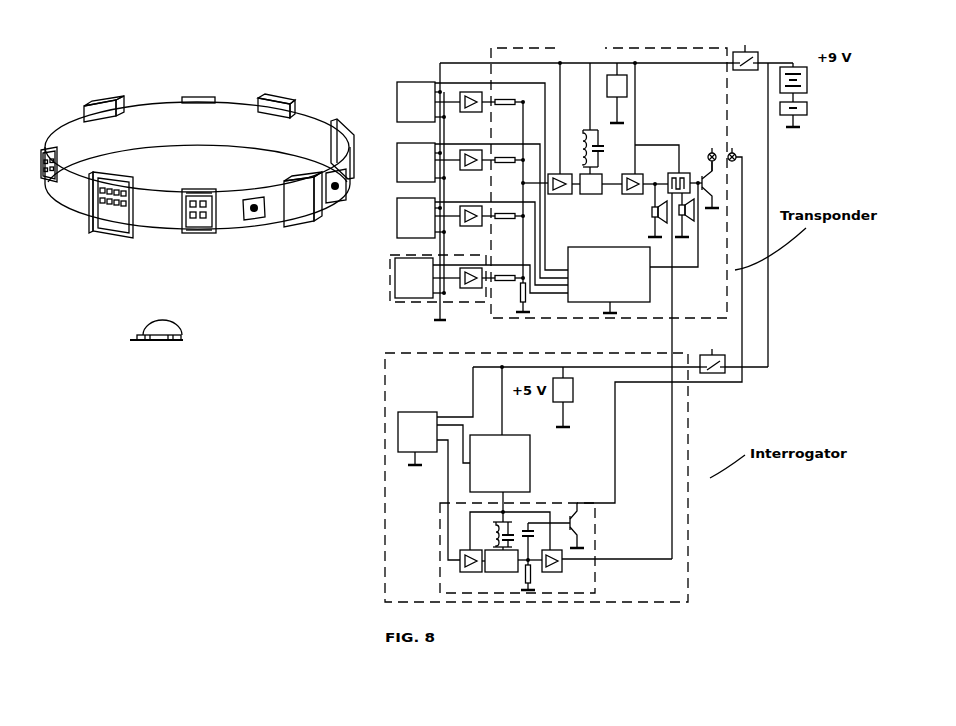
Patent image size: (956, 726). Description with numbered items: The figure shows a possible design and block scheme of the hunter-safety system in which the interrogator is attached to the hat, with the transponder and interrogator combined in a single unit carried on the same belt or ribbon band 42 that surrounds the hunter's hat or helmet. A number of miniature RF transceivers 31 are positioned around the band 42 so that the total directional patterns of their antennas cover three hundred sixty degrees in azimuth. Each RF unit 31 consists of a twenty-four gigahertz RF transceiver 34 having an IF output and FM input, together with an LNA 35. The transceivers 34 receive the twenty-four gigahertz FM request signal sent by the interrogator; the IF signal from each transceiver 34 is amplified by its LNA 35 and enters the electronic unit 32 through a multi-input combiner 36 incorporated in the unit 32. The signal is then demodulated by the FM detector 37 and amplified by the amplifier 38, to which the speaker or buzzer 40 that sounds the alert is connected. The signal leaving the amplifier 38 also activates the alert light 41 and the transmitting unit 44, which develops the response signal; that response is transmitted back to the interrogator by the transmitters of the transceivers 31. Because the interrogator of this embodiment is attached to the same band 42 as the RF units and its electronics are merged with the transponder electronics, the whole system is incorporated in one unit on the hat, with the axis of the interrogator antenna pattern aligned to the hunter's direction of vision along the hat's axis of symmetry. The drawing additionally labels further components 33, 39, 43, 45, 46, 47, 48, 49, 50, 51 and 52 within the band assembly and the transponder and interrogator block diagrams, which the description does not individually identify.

The RF transceiver 31 is at (200, 92).
The electronic unit 32 is at (278, 93).
The battery power supply 33 is at (97, 93).
The 24-GHz RF transceiver 34 is at (390, 258).
The LNA 35 is at (473, 260).
The multi-input combiner 36 is at (567, 195).
The FM detector 37 is at (602, 195).
The amplifier 38 is at (647, 165).
The voltage regulator 39 is at (630, 92).
The speaker (buzzer) 40 is at (647, 213).
The alert light 41 is at (705, 142).
The band 42 is at (238, 98).
The switch 43 is at (258, 220).
The transmitting unit 44 is at (660, 280).
The keypad 45 is at (137, 332).
The interrogator transceiver 46 is at (402, 410).
The interrogator controller 47 is at (533, 477).
The voltage regulator 48 is at (568, 375).
The detector circuit 49 is at (597, 542).
The light emitting diode 50 is at (666, 309).
The speaker 51 is at (698, 217).
The switch 52 is at (337, 203).